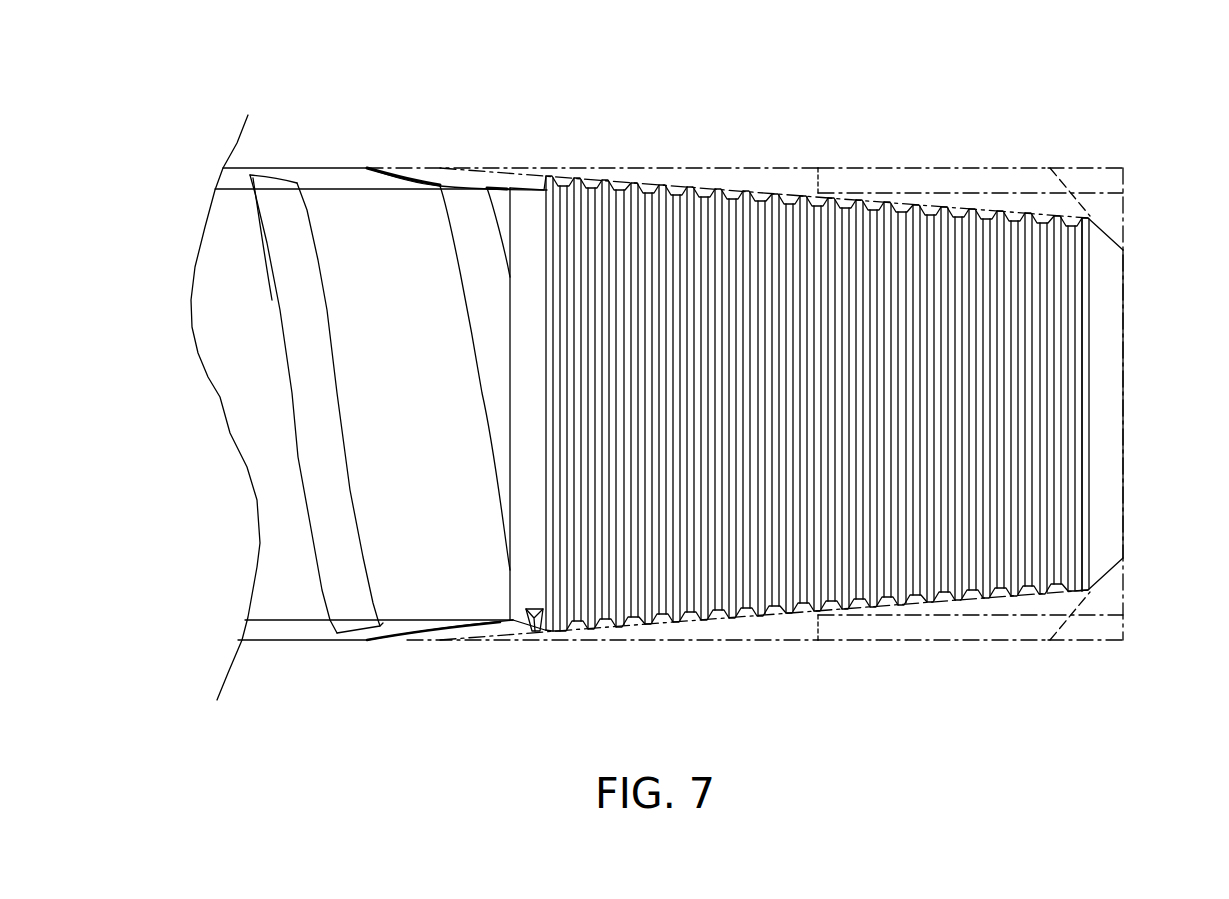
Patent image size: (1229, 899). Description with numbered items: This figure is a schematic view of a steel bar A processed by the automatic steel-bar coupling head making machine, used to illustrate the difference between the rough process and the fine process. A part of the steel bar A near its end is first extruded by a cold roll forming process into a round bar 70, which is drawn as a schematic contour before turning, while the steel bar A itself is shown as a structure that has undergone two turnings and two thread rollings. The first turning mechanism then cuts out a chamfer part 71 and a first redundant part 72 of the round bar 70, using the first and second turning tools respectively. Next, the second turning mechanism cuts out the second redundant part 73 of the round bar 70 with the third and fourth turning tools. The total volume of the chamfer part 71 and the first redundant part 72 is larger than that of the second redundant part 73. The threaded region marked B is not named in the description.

The round bar 70 is at (1125, 178).
The chamfer part 71 is at (1088, 182).
The first redundant part 72 is at (938, 182).
The second redundant part 73 is at (770, 182).
The steel bar A is at (393, 105).
The thread crest line B is at (1080, 407).